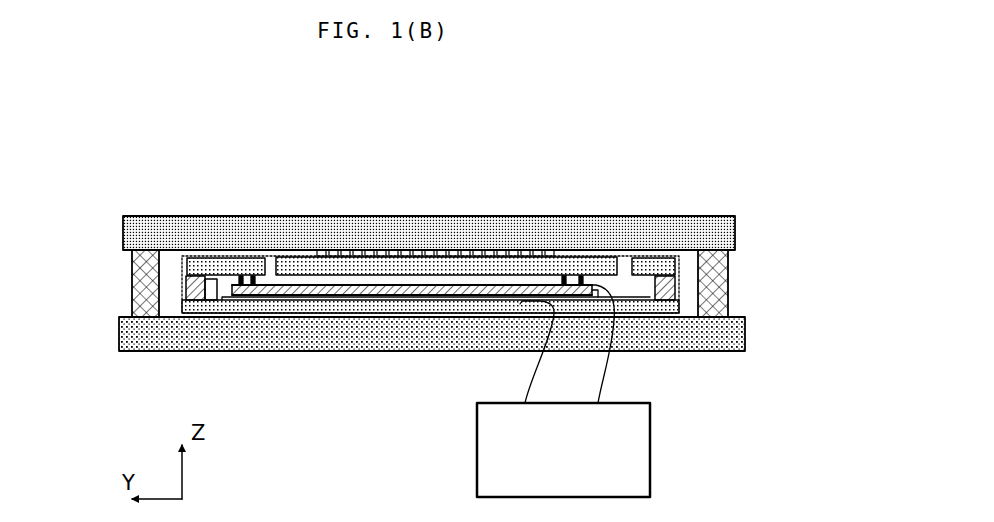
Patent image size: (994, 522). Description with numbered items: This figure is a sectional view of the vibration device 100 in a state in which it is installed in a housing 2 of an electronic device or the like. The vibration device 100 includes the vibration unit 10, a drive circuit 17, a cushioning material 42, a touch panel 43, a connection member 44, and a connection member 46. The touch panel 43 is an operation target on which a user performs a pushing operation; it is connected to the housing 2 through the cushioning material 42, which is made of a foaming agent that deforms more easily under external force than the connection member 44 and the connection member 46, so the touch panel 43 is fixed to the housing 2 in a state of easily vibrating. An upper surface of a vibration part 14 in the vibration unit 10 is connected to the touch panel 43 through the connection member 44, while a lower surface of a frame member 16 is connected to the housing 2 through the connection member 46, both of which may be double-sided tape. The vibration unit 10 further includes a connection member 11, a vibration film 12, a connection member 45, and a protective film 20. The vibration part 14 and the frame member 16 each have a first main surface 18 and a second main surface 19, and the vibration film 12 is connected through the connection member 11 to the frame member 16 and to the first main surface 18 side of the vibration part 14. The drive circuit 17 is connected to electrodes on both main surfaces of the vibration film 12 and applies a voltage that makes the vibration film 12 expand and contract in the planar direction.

The vibration device 100 is at (276, 146).
The housing 2 is at (710, 352).
The vibration unit 10 is at (357, 314).
The connection member 11 is at (253, 286).
The vibration film 12 is at (322, 296).
The vibration part 14 is at (497, 287).
The frame member 16 is at (216, 285).
The drive circuit 17 is at (650, 443).
The first main surface 18 is at (402, 286).
The second main surface 19 is at (612, 255).
The protective film 20 is at (447, 302).
The cushioning material 42 is at (132, 276).
The touch panel 43 is at (362, 216).
The connection member 44 is at (445, 257).
The connection member 45 is at (182, 290).
The connection member 46 is at (196, 301).